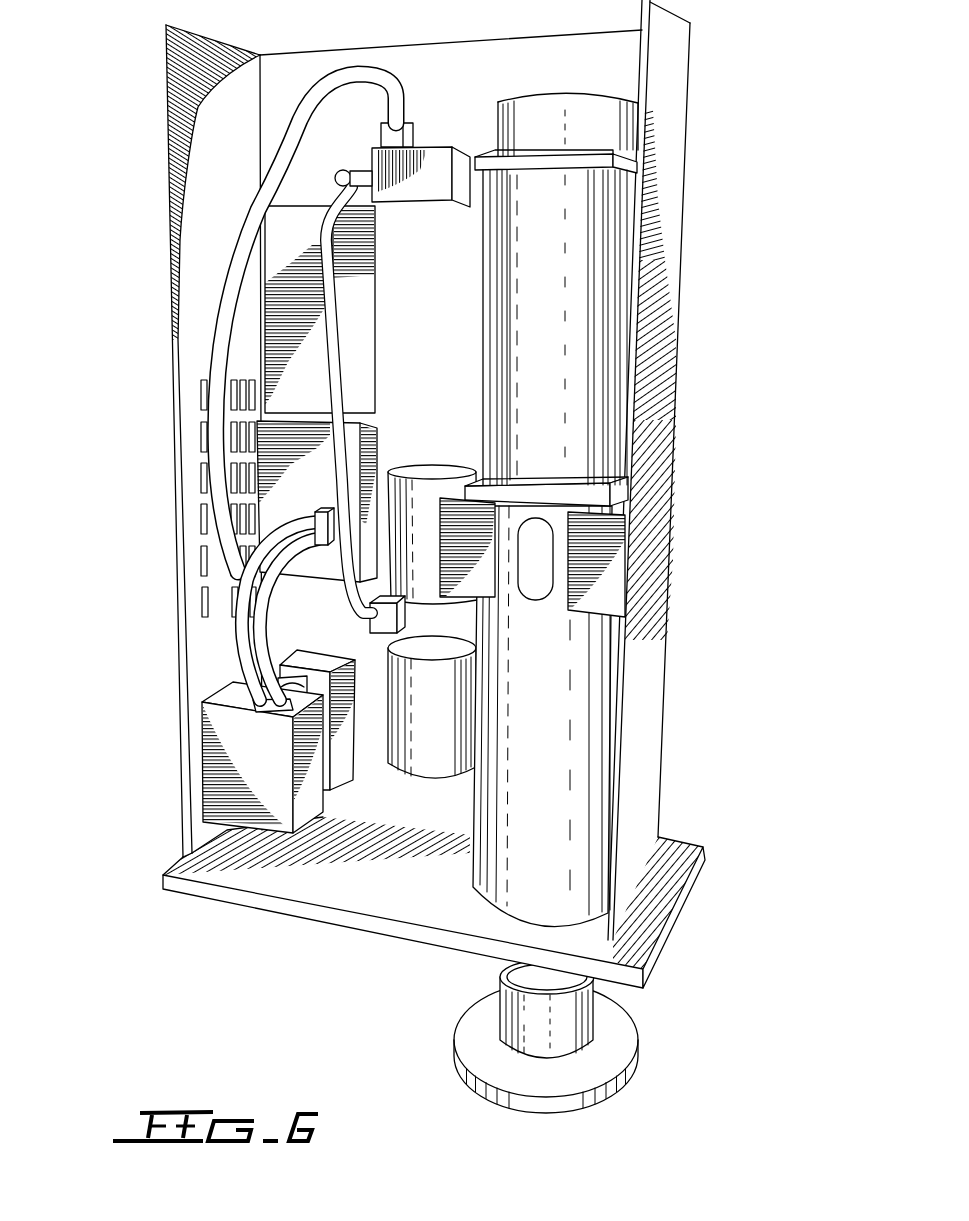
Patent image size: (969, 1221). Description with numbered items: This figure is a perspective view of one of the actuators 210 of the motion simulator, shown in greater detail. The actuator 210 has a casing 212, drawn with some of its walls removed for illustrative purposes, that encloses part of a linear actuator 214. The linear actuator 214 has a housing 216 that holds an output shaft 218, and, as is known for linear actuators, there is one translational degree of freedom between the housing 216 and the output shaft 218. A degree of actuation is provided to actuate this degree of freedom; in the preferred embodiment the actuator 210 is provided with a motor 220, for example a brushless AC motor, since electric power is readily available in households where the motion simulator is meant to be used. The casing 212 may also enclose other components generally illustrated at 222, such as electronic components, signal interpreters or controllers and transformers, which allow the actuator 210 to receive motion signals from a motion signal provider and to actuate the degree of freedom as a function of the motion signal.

The actuator 210 is at (158, 262).
The casing 212 is at (667, 103).
The linear actuator 214 is at (461, 872).
The housing 216 is at (548, 706).
The output shaft 218 is at (535, 1023).
The motor 220 is at (558, 312).
The other components 222 is at (248, 512).